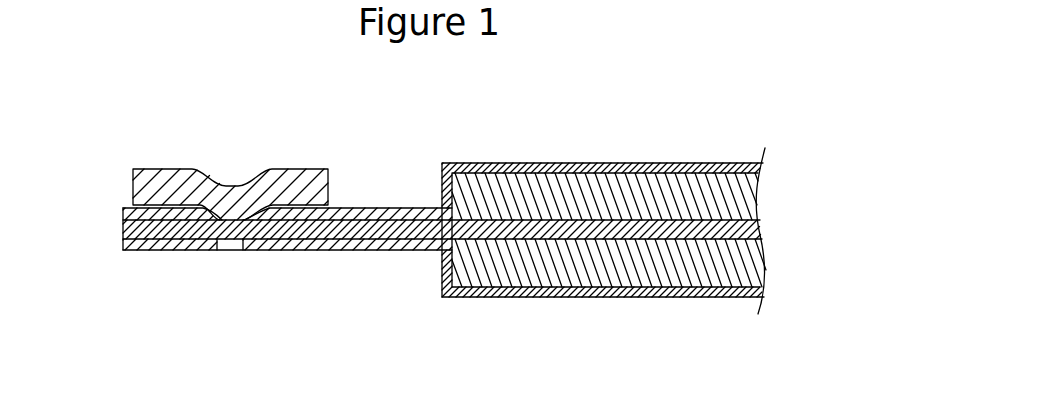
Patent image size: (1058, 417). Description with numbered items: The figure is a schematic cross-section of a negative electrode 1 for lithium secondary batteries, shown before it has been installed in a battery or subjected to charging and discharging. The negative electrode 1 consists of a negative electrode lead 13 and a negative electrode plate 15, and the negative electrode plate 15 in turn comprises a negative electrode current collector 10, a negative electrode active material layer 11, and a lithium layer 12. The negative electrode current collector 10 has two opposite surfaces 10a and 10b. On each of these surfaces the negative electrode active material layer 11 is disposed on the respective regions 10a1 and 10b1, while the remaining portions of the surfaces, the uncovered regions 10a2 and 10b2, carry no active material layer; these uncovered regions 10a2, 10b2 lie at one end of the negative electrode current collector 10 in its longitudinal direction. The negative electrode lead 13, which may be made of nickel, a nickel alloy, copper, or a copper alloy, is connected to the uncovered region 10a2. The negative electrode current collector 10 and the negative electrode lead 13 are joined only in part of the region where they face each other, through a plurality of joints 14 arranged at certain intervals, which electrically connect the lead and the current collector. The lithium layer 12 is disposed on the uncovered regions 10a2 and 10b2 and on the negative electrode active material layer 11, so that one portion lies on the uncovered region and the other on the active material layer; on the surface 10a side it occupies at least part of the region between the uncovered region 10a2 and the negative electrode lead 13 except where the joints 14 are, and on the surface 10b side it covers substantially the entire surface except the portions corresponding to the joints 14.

The negative electrode for lithium secondary batteries 1 is at (165, 105).
The negative electrode current collector 10 is at (122, 231).
The surface of the negative electrode current collector 10a is at (503, 107).
The region of surface 10a 10a1 is at (498, 214).
The uncovered region of surface 10a 10a2 is at (392, 207).
The surface of the negative electrode current collector 10b is at (507, 366).
The region of surface 10b 10b1 is at (486, 290).
The uncovered region of surface 10b 10b2 is at (390, 252).
The negative electrode active material layer 11 is at (639, 172).
The lithium layer 12 is at (570, 163).
The negative electrode lead 13 is at (305, 168).
The joints 14 is at (222, 222).
The negative electrode plate 15 is at (122, 208).